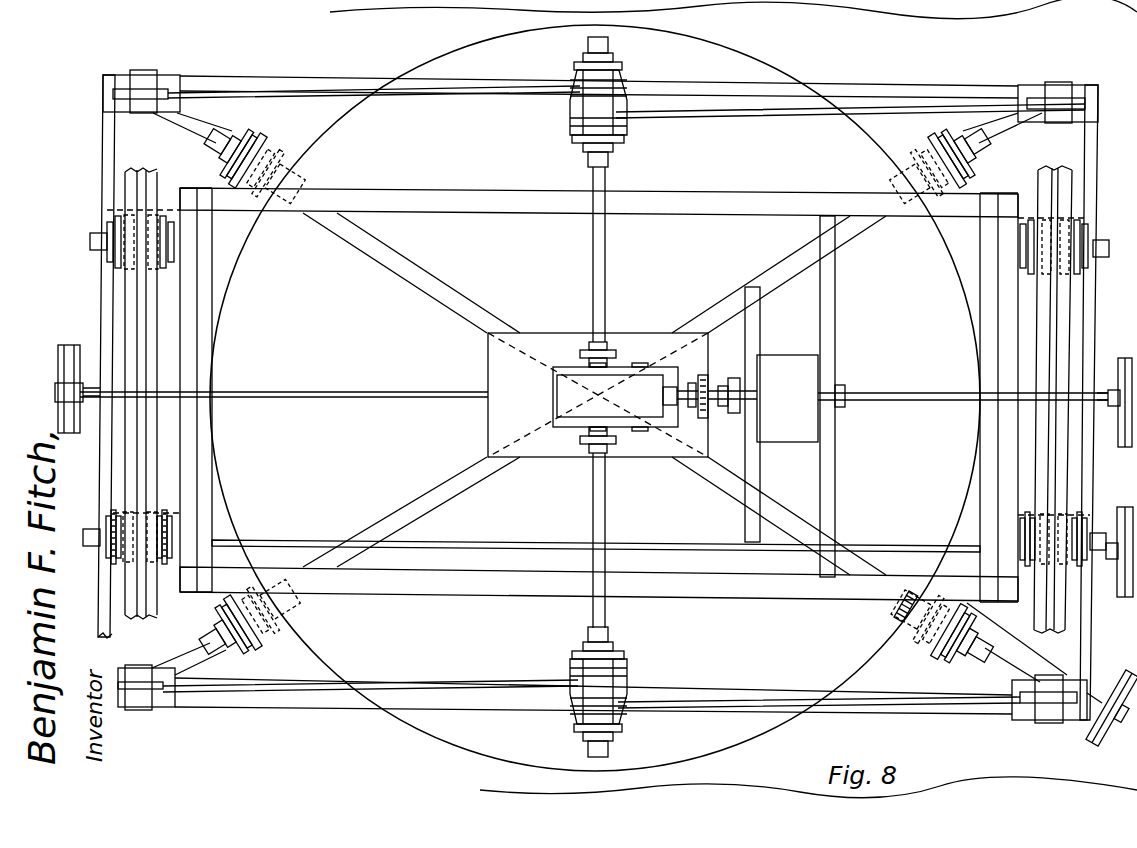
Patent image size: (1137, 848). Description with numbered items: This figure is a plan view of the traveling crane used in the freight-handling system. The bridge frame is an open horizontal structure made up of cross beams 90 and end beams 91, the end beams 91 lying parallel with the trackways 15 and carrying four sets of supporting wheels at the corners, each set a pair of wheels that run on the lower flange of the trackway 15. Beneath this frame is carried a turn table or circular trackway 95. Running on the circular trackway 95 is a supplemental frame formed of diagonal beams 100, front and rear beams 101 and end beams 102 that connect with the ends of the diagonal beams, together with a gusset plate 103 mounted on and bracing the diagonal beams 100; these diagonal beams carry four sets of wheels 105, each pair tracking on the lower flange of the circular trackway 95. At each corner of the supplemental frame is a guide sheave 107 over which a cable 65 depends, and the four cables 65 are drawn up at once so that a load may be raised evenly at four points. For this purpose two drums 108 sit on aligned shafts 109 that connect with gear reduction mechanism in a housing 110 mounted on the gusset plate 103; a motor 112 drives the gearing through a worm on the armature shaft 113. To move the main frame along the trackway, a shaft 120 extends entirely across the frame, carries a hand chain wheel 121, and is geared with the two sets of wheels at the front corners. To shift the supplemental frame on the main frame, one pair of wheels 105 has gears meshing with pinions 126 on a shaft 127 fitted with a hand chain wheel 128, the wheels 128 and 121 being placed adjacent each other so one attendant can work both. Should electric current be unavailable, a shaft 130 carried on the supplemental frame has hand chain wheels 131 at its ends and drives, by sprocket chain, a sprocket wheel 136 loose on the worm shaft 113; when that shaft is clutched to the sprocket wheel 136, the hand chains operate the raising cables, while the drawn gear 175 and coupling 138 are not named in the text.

The trackway 15 is at (158, 172).
The cable 65 is at (506, 87).
The cross beam 90 is at (535, 214).
The end beam 91 is at (212, 363).
The circular trackway 95 is at (234, 262).
The diagonal beam 100 is at (458, 494).
The front and rear beam 101 is at (490, 77).
The end beam 102 is at (102, 300).
The gusset plate 103 is at (598, 395).
The wheel 105 is at (302, 172).
The guide sheave 107 is at (158, 708).
The drum 108 is at (583, 112).
The shaft 109 is at (605, 299).
The housing 110 is at (625, 397).
The motor 112 is at (787, 398).
The armature shaft 113 is at (692, 380).
The shaft 120 is at (912, 546).
The hand chain wheel 121 is at (1122, 596).
The pinion 126 is at (966, 603).
The shaft 127 is at (1048, 670).
The hand chain wheel 128 is at (1126, 688).
The shaft 130 is at (907, 401).
The hand chain wheel 131 is at (62, 354).
The sprocket wheel 136 is at (708, 416).
The coupling disc 138 is at (742, 410).
The pinion 175 is at (888, 620).